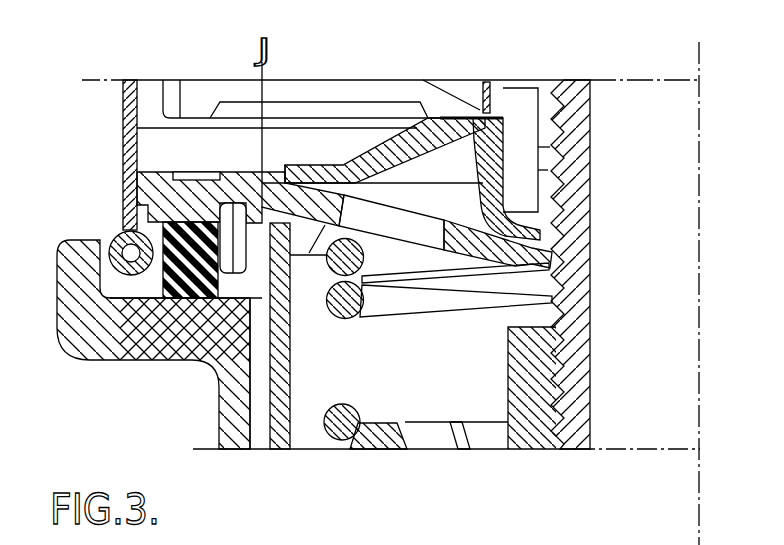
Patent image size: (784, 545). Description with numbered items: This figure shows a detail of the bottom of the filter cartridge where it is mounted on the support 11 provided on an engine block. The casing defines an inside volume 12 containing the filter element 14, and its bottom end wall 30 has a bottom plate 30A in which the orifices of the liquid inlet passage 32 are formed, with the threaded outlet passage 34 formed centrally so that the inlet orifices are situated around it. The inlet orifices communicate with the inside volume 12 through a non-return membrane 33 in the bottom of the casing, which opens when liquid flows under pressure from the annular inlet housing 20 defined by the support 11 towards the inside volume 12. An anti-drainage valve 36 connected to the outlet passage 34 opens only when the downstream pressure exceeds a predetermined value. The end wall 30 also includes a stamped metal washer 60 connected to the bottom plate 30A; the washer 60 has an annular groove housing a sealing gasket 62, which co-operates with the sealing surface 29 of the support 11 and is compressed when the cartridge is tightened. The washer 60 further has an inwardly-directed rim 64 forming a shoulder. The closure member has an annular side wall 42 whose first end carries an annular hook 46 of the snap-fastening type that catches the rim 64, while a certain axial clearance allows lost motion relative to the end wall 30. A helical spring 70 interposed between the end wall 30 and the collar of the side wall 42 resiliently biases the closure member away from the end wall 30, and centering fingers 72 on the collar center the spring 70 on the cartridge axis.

The support 11 is at (527, 423).
The inside volume 12 is at (148, 97).
The filter element 14 is at (190, 100).
The annular inlet housing 20 is at (258, 405).
The sealing surface 29 is at (117, 352).
The bottom end wall 30 is at (132, 180).
The bottom plate 30A is at (540, 249).
The liquid inlet passage 32 is at (428, 227).
The non-return membrane 33 is at (417, 147).
The outlet passage 34 is at (488, 275).
The anti-drainage valve 36 is at (78, 250).
The annular side wall 42 is at (282, 408).
The annular hook 46 is at (287, 175).
The stamped metal washer 60 is at (117, 238).
The sealing gasket 62 is at (170, 348).
The inwardly-directed rim 64 is at (203, 352).
The helical spring 70 is at (485, 290).
The centering fingers 72 is at (380, 440).